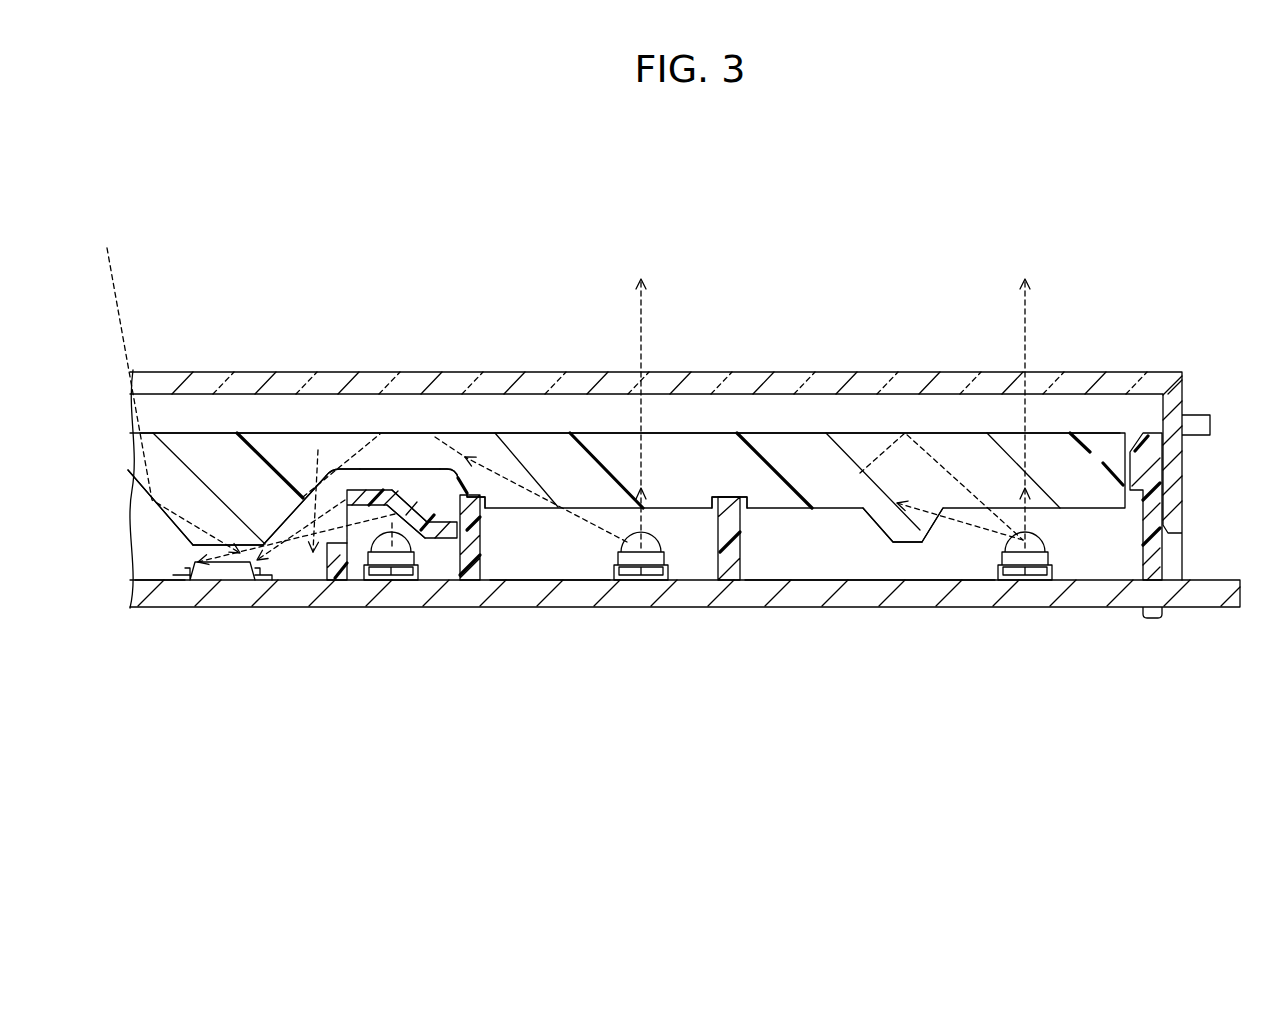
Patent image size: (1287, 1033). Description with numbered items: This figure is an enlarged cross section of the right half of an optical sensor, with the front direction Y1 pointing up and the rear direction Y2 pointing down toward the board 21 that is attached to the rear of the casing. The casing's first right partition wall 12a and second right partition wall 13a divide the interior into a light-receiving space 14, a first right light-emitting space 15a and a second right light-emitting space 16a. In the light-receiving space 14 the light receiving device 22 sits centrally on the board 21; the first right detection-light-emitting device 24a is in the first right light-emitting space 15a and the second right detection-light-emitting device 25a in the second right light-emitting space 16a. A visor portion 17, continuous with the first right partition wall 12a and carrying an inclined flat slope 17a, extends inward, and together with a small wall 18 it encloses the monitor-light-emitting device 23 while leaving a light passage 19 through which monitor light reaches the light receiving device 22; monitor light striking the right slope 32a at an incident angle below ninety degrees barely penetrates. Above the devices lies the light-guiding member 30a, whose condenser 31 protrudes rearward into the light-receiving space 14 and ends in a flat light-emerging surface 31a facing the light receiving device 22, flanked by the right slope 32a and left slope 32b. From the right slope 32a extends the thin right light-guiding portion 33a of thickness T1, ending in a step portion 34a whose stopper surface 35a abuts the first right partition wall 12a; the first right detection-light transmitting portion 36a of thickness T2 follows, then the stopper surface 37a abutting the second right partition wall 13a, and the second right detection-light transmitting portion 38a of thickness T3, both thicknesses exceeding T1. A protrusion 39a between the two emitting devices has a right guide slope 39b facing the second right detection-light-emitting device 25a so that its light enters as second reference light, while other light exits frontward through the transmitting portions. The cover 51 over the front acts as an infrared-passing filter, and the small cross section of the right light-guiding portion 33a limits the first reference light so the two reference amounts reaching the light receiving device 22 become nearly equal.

The first right partition wall 12a is at (466, 530).
The second right partition wall 13a is at (733, 547).
The light-receiving space 14 is at (157, 560).
The first right light-emitting space 15a is at (581, 572).
The second right light-emitting space 16a is at (854, 572).
The visor portion 17 is at (365, 488).
The slope 17a is at (440, 540).
The small wall 18 is at (337, 570).
The light passage 19 is at (334, 478).
The board 21 is at (1105, 592).
The light receiving device 22 is at (224, 578).
The monitor-light-emitting device 23 is at (390, 580).
The first right detection-light-emitting device 24a is at (641, 580).
The second right detection-light-emitting device 25a is at (1025, 580).
The light guide plate 30a is at (790, 433).
The condenser 31 is at (215, 447).
The light-emerging surface 31a is at (191, 572).
The right slope 32a is at (290, 528).
The left slope 32b is at (168, 520).
The right light-guiding portion 33a is at (437, 468).
The step portion 34a is at (462, 482).
The stopper surface 35a is at (478, 578).
The first right detection-light transmitting portion 36a is at (650, 440).
The stopper surface 37a is at (712, 520).
The second right detection-light transmitting portion 38a is at (950, 445).
The protrusion 39a is at (906, 540).
The right guide slope 39b is at (932, 528).
The cover 51 is at (1115, 388).
The thickness of right light-guiding portion T1 is at (397, 434).
The thickness of first right detection-light transmitting portion T2 is at (678, 434).
The thickness of second right detection-light transmitting portion T3 is at (1062, 434).
The Y1 direction Y1 is at (553, 252).
The Y2 direction Y2 is at (552, 269).